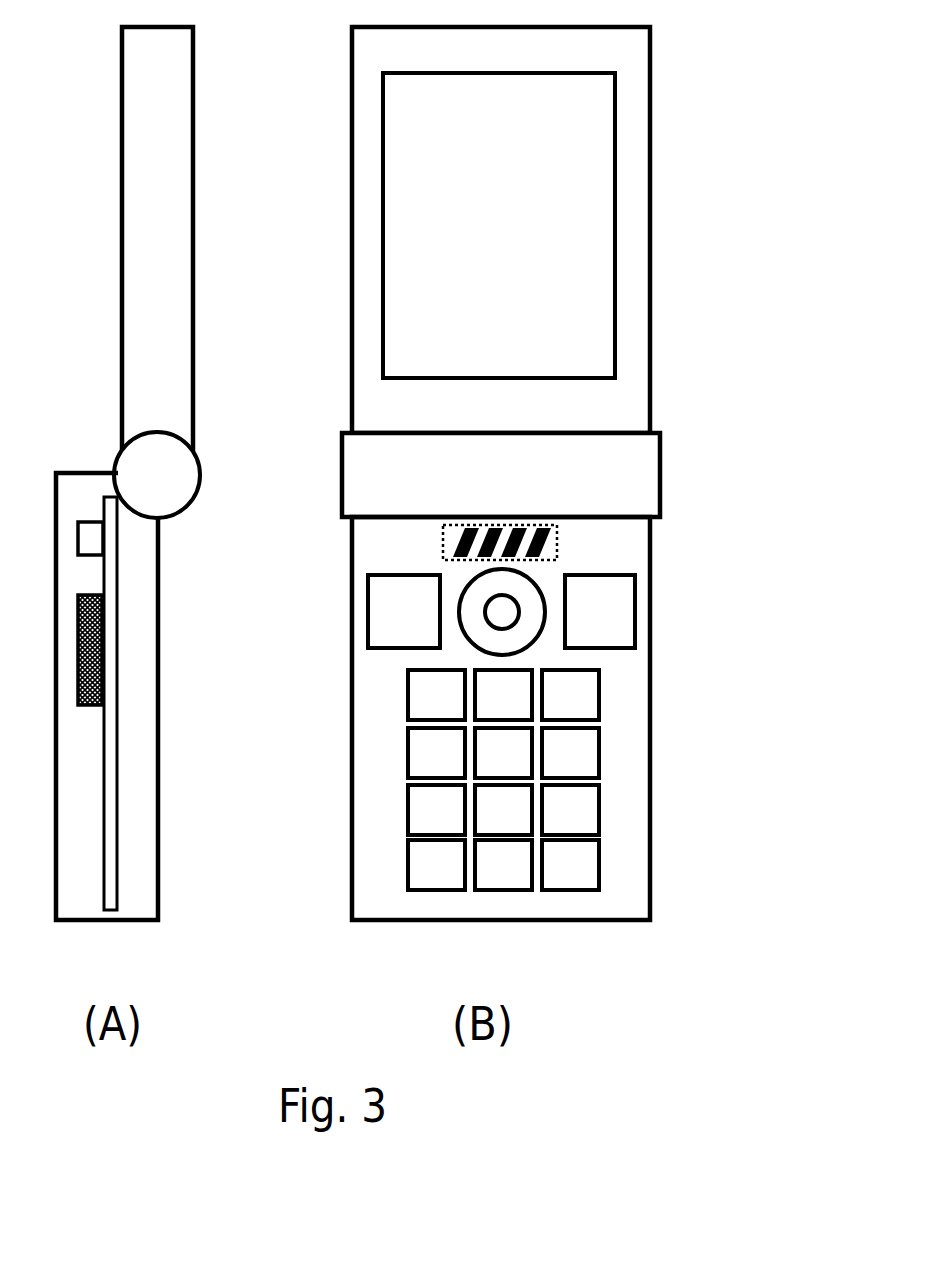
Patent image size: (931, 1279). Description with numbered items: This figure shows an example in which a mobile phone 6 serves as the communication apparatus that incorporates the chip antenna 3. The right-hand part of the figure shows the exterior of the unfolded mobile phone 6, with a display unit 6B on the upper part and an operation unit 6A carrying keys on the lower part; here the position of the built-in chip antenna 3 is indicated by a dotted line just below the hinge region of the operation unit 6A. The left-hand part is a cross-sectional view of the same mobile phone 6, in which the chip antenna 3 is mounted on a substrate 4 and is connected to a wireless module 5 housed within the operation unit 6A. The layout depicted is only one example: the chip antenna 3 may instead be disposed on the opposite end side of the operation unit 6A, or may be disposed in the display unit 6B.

The chip antenna 3 is at (435, 542).
The substrate 4 is at (115, 782).
The wireless module 5 is at (98, 660).
The mobile phone 6 is at (383, 932).
The operation unit 6A is at (632, 795).
The display unit 6B is at (633, 257).